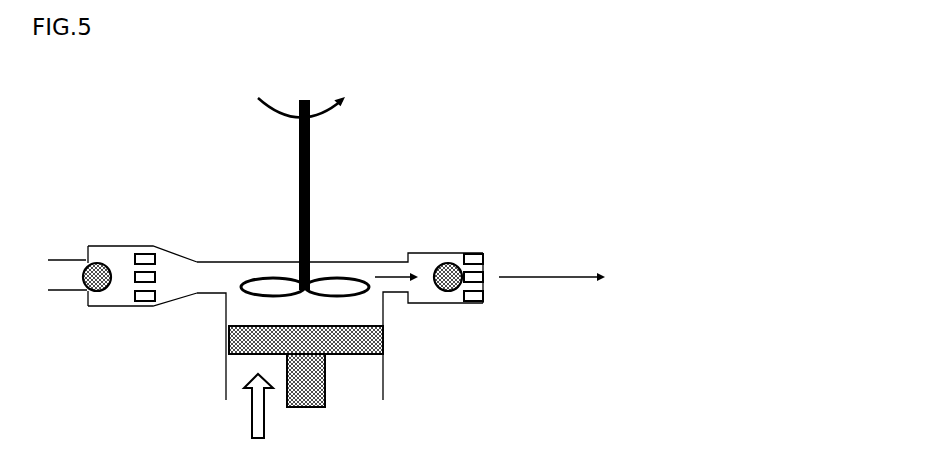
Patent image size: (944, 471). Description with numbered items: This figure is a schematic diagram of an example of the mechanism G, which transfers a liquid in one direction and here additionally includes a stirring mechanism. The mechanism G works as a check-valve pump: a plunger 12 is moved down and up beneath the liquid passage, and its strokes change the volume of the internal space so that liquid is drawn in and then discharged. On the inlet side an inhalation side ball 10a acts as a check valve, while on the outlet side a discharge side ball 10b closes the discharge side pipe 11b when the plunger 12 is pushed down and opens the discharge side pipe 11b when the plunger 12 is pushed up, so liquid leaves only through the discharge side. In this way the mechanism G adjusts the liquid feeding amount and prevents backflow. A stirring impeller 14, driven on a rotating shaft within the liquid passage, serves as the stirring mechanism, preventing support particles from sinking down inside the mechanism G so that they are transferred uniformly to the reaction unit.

The inhalation side ball 10a is at (86, 262).
The discharge side ball 10b is at (433, 263).
The discharge side pipe 11b is at (58, 291).
The plunger 12 is at (325, 407).
The stirring impeller 14 is at (299, 200).
The mechanism G is at (470, 128).